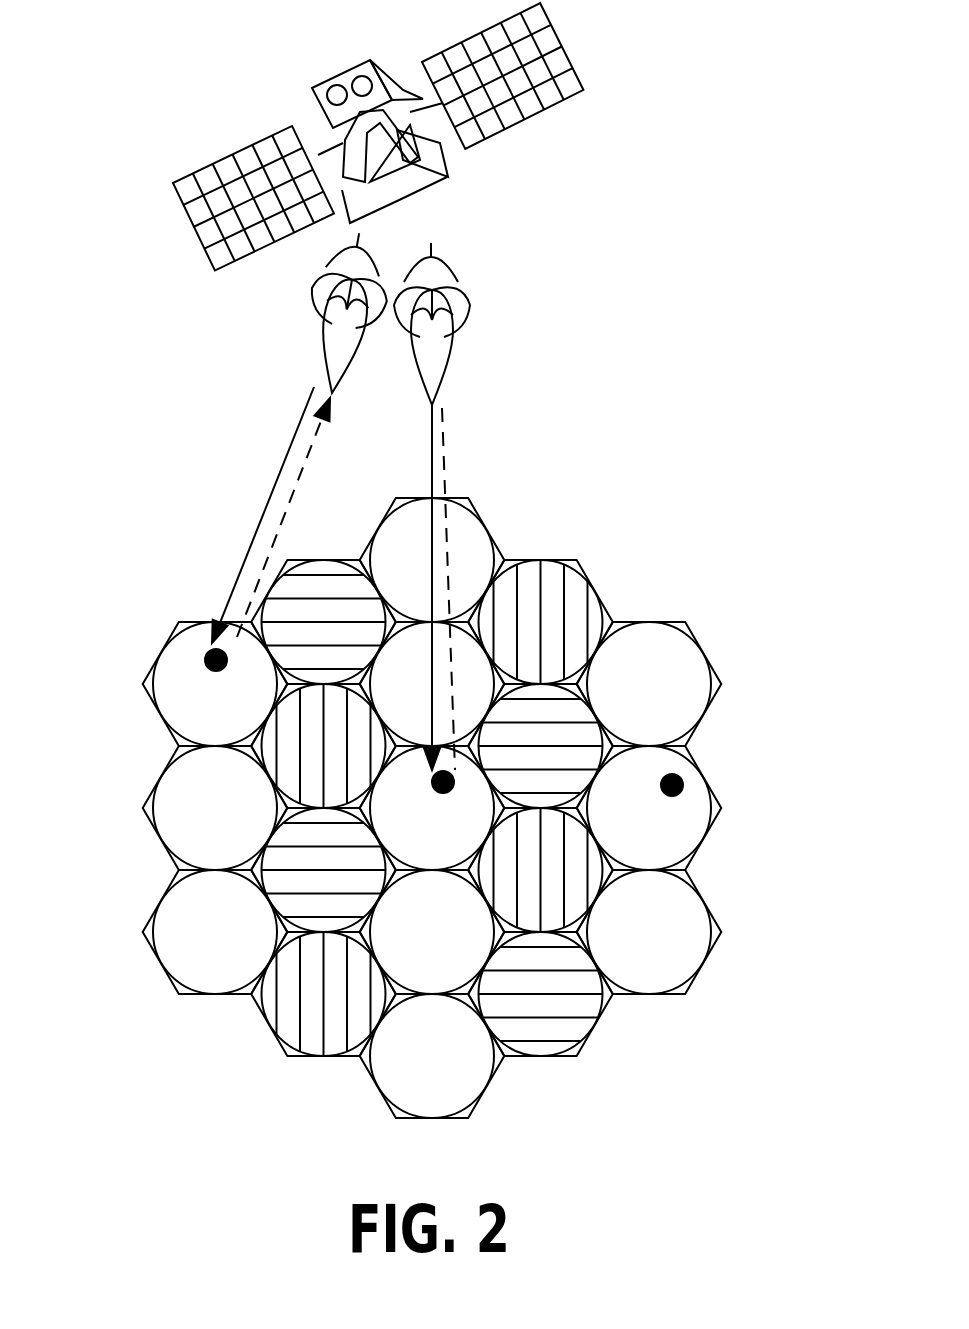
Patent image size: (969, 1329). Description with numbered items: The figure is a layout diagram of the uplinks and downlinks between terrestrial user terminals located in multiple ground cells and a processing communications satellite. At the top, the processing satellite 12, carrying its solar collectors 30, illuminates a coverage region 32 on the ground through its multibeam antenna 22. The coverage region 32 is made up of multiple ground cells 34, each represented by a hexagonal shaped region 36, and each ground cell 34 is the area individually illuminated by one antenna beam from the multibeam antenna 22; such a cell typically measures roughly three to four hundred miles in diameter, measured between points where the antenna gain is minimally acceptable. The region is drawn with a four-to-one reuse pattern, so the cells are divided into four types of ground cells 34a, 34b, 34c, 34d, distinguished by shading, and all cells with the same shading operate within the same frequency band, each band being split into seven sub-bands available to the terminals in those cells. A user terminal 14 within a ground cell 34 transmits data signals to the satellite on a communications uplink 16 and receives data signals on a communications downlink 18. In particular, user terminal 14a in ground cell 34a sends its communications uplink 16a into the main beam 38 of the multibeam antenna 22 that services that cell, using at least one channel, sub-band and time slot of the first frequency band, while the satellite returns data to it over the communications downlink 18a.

The processing satellite 12 is at (402, 136).
The solar collectors 30 is at (583, 88).
The multibeam antenna 22 is at (435, 173).
The main beam 38 is at (333, 345).
The communications uplink 16 is at (443, 442).
The communications uplink 16a is at (307, 463).
The communications downlink 18 is at (432, 470).
The communications downlink 18a is at (250, 543).
The coverage region 32 is at (435, 808).
The ground cell 34 is at (688, 814).
The ground cell 34a is at (178, 662).
The ground cell 34b is at (318, 572).
The ground cell 34c is at (540, 583).
The ground cell 34d is at (177, 820).
The hexagonal shaped region 36 is at (723, 810).
The user terminal 14 is at (683, 785).
The user terminal 14a is at (207, 657).